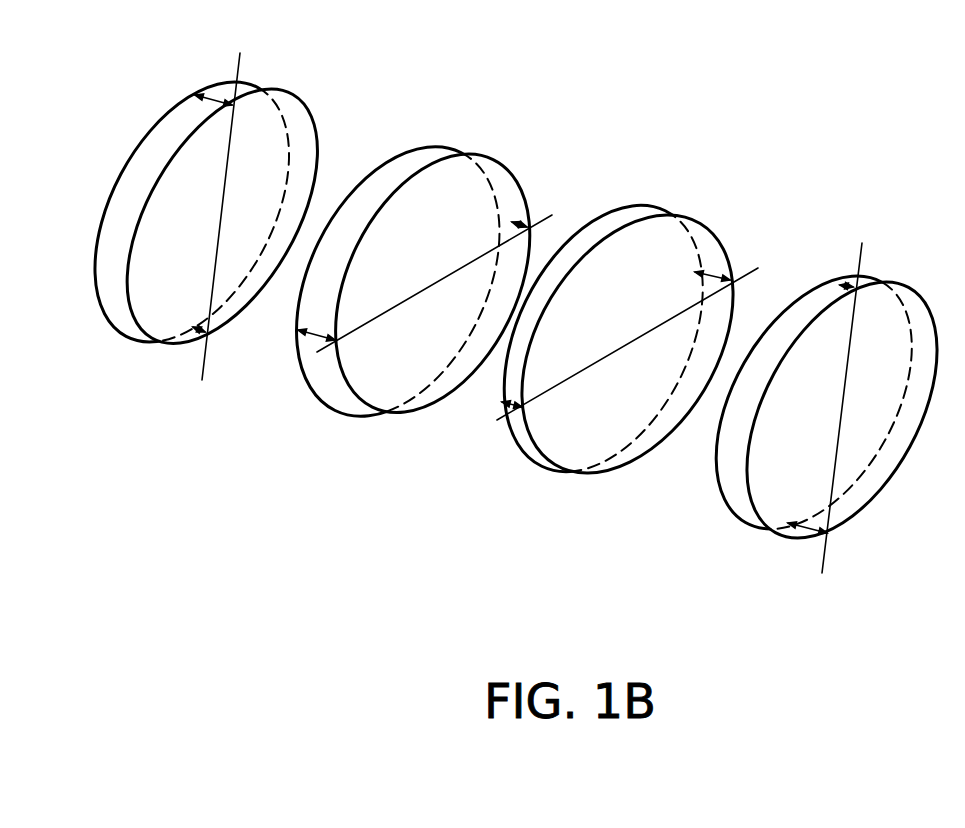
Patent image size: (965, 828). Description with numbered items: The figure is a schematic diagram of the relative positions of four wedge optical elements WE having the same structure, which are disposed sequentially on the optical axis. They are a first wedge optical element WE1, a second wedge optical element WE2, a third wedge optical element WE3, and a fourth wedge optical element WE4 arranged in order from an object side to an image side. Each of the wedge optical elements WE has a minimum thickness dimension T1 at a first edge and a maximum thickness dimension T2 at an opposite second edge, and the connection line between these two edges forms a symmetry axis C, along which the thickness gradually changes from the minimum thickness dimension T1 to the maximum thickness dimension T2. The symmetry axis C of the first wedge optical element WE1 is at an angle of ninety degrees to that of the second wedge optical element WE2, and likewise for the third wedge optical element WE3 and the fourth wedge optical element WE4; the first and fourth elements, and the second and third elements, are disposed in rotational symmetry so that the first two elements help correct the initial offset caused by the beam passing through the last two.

The wedge optical element WE is at (510, 332).
The first wedge optical element WE1 is at (121, 318).
The second wedge optical element WE2 is at (338, 388).
The third wedge optical element WE3 is at (527, 455).
The fourth wedge optical element WE4 is at (745, 515).
The symmetry axis C is at (536, 294).
The minimum thickness dimension T1 is at (195, 336).
The maximum thickness dimension T2 is at (208, 92).